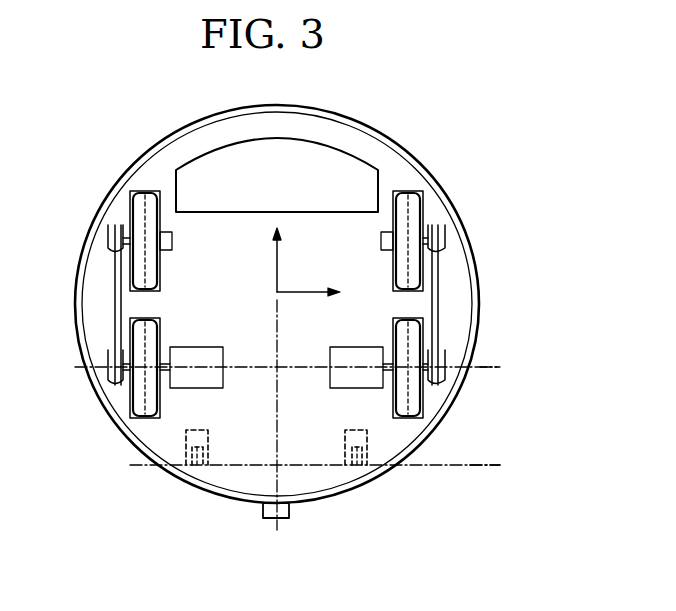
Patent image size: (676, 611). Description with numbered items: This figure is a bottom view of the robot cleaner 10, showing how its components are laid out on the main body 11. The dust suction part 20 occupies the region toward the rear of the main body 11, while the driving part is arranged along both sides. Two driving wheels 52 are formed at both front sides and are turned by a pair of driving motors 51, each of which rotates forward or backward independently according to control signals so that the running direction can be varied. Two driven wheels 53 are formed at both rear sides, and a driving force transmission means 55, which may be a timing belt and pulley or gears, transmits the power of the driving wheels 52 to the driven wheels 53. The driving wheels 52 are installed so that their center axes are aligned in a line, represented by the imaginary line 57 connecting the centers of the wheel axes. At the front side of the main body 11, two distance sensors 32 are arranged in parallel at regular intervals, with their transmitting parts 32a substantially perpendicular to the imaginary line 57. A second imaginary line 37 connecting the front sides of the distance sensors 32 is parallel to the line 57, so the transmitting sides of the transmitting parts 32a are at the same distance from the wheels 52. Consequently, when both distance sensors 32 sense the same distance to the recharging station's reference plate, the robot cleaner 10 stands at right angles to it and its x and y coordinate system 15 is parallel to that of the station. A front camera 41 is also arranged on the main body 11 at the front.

The robot cleaner 10 is at (192, 84).
The main body 11 is at (157, 165).
The dust suction part 20 is at (335, 148).
The x and y coordinate system 15 is at (276, 260).
The driven wheels 53 is at (140, 200).
The driving wheels 52 is at (140, 398).
The driving motors 51 is at (205, 385).
The driving force transmission means 55 is at (115, 305).
The imaginary line connecting the axes of the wheels 57 is at (500, 366).
The imaginary line connecting the front sides of the distance sensors 37 is at (487, 468).
The distance sensors 32 is at (190, 452).
The transmitting parts 32a is at (200, 462).
The front camera 41 is at (284, 520).